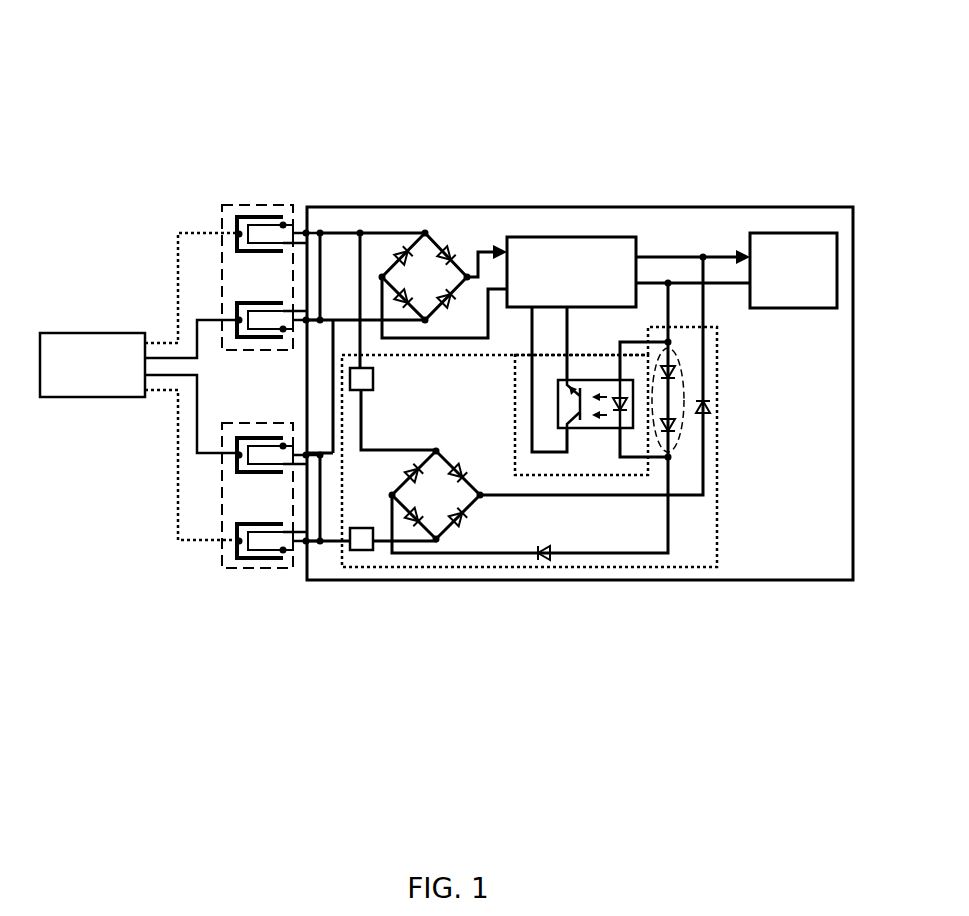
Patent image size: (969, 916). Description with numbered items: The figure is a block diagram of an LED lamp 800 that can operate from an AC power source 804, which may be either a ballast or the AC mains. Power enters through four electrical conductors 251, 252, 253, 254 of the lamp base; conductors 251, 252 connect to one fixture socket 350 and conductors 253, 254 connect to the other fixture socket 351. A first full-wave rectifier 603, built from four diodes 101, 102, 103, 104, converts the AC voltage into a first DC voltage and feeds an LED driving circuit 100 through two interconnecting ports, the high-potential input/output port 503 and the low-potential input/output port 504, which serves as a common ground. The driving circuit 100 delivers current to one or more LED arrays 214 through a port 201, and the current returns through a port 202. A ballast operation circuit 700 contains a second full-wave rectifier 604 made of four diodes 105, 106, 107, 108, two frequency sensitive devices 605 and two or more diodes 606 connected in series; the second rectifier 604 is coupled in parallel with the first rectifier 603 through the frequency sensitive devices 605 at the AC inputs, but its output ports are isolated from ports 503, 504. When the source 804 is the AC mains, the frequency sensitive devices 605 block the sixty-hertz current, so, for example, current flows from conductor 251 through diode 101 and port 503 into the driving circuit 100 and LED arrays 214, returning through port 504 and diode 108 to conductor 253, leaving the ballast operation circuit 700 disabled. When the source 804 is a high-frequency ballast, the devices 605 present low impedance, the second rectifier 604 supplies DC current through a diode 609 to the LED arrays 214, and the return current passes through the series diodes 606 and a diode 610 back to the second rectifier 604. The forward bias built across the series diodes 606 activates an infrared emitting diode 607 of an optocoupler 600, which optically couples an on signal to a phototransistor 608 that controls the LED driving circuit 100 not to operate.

The LED driving circuit 100 is at (576, 237).
The diode 101 is at (447, 250).
The diode 102 is at (448, 303).
The diode 103 is at (402, 300).
The diode 104 is at (399, 250).
The diode 105 is at (462, 468).
The diode 106 is at (462, 522).
The diode 107 is at (412, 522).
The diode 108 is at (410, 468).
The port 201 is at (705, 255).
The port 202 is at (667, 281).
The LED arrays 214 is at (796, 310).
The electrical conductor 251 is at (265, 224).
The electrical conductor 252 is at (250, 316).
The electrical conductor 253 is at (247, 457).
The electrical conductor 254 is at (265, 560).
The fixture socket 350 is at (230, 207).
The fixture socket 351 is at (227, 568).
The input/output port 503 is at (481, 250).
The input/output port 504 is at (385, 262).
The optocoupler 600 is at (597, 432).
The first full-wave rectifier 603 is at (425, 273).
The second full-wave rectifier 604 is at (437, 500).
The frequency sensitive device 605 is at (358, 390).
The diodes connected in series 606 is at (680, 433).
The infrared emitting diode 607 is at (628, 413).
The phototransistor 608 is at (580, 423).
The diode 609 is at (710, 417).
The diode 610 is at (545, 562).
The ballast operation circuit 700 is at (718, 535).
The LED lamp 800 is at (488, 172).
The AC power source 804 is at (84, 332).